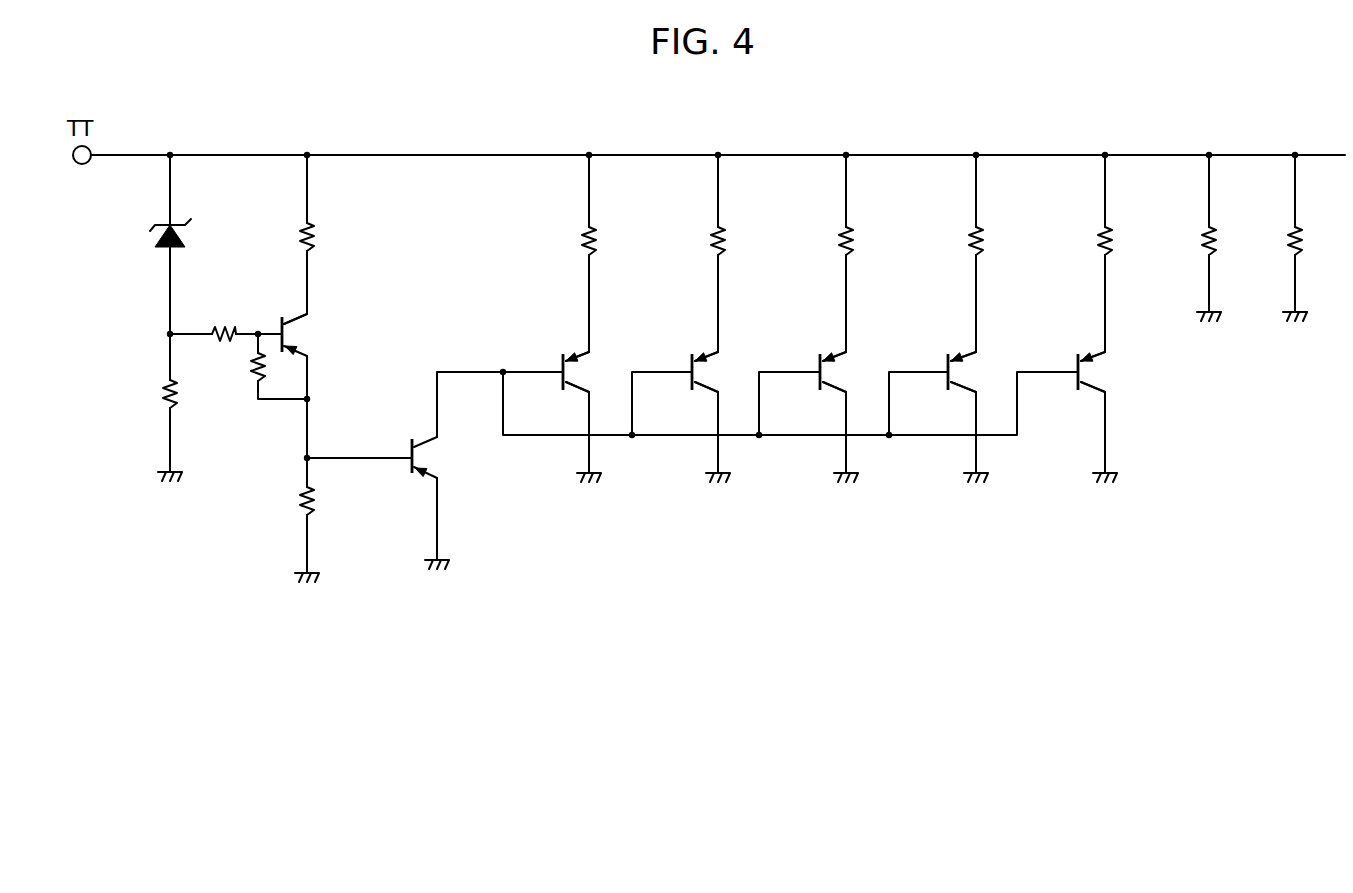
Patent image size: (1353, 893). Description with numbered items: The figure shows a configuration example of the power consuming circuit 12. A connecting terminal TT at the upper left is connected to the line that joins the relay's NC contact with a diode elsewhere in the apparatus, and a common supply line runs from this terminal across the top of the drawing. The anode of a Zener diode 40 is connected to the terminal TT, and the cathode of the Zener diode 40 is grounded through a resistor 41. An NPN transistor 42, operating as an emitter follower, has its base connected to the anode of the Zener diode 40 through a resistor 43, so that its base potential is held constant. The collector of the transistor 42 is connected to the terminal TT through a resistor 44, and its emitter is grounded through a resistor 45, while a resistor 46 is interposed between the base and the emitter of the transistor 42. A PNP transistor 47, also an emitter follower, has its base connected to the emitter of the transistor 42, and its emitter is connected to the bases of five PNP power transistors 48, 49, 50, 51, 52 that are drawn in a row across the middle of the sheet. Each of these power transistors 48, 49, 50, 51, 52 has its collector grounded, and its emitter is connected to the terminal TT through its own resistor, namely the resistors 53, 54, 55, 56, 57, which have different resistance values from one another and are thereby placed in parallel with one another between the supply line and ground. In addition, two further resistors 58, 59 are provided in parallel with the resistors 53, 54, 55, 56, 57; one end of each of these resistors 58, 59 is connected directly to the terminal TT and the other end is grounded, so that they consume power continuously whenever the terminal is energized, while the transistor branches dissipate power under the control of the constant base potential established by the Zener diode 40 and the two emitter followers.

The power consuming circuit 12 is at (232, 110).
The Zener diode 40 is at (189, 242).
The resistor 41 is at (162, 395).
The NPN transistor 42 is at (296, 322).
The resistor 43 is at (222, 326).
The resistor 44 is at (318, 243).
The resistor 45 is at (300, 502).
The resistor 46 is at (251, 373).
The PNP transistor 47 is at (414, 480).
The PNP transistor 48 is at (562, 356).
The PNP transistor 49 is at (691, 356).
The PNP transistor 50 is at (819, 356).
The PNP transistor 51 is at (947, 356).
The PNP transistor 52 is at (1077, 356).
The resistor 53 is at (582, 240).
The resistor 54 is at (712, 240).
The resistor 55 is at (840, 240).
The resistor 56 is at (970, 240).
The resistor 57 is at (1098, 240).
The resistor 58 is at (1202, 240).
The resistor 59 is at (1288, 240).